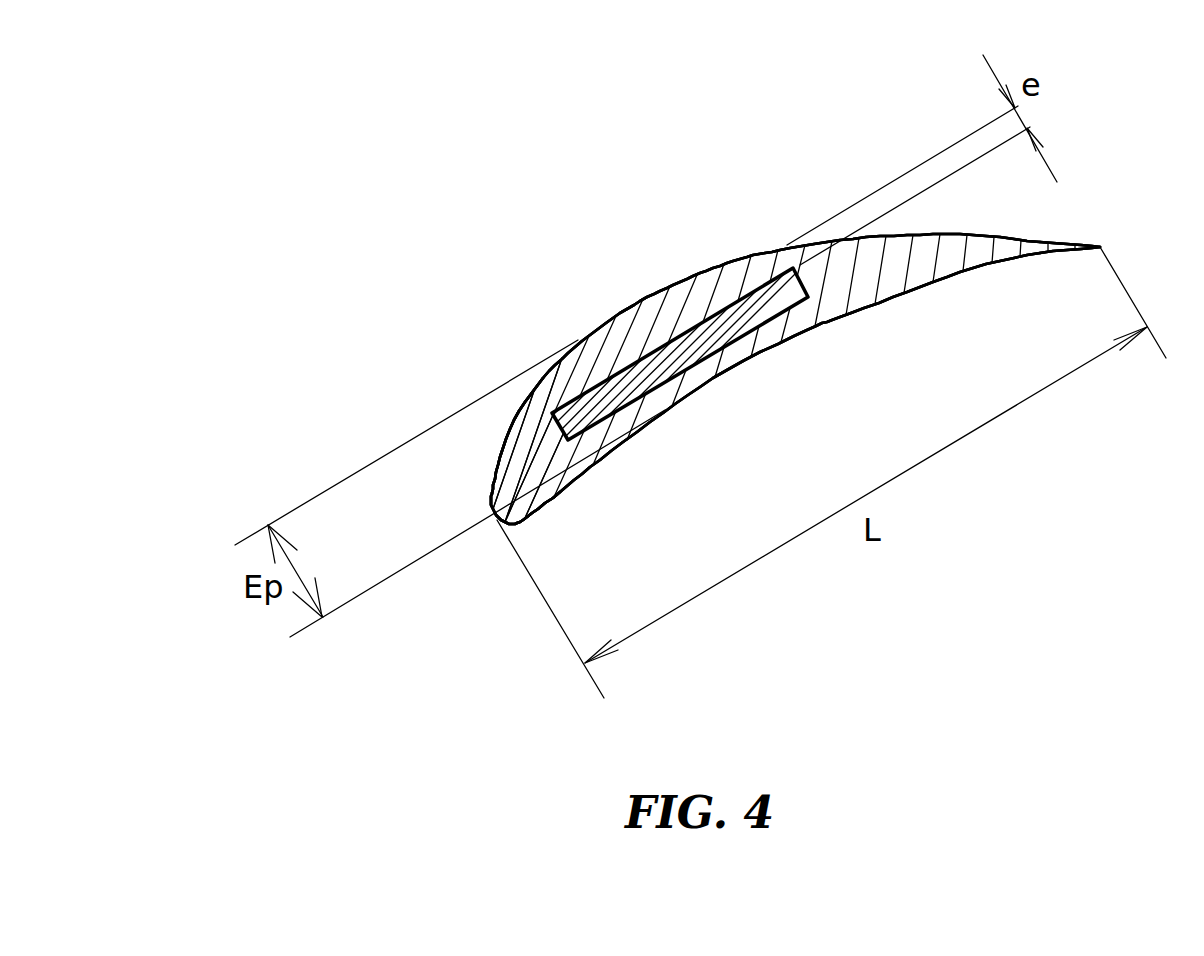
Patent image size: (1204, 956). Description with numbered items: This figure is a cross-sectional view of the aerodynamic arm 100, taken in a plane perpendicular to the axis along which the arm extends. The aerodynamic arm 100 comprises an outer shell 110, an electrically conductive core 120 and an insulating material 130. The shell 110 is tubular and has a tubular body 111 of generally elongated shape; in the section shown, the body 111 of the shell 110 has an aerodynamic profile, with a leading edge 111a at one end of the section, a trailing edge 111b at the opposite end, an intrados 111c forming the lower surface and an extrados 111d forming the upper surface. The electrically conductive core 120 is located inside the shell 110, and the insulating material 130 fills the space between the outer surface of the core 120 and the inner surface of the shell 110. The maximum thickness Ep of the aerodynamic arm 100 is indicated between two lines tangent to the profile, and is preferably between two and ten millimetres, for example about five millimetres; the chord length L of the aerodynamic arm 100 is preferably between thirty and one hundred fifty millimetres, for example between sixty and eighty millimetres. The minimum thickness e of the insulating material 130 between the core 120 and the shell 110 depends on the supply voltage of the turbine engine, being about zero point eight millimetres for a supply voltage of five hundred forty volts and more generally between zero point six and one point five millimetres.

The aerodynamic arm 100 is at (916, 190).
The outer shell 110 is at (611, 453).
The tubular body 111 is at (716, 268).
The leading edge 111a is at (503, 521).
The trailing edge 111b is at (1100, 246).
The intrados 111c is at (719, 373).
The extrados 111d is at (582, 340).
The electrically conductive core 120 is at (680, 335).
The insulating material 130 is at (523, 460).